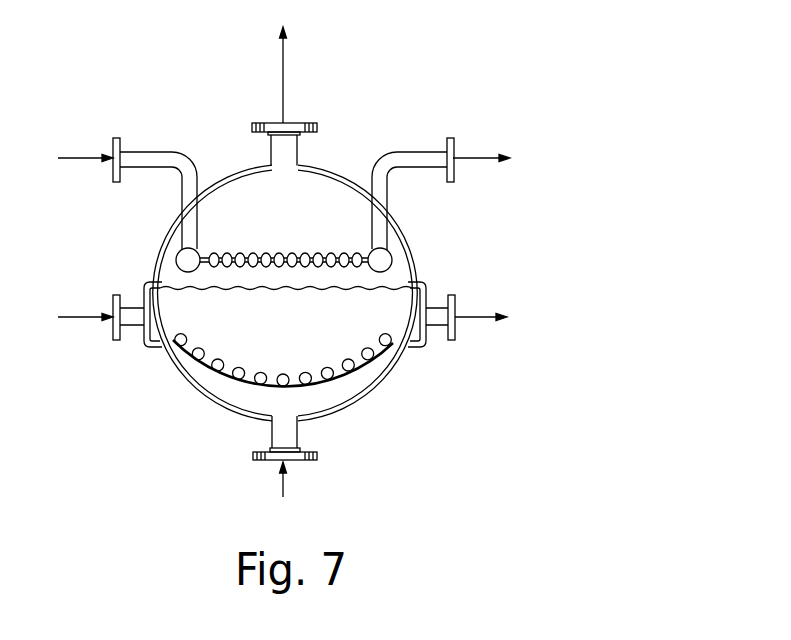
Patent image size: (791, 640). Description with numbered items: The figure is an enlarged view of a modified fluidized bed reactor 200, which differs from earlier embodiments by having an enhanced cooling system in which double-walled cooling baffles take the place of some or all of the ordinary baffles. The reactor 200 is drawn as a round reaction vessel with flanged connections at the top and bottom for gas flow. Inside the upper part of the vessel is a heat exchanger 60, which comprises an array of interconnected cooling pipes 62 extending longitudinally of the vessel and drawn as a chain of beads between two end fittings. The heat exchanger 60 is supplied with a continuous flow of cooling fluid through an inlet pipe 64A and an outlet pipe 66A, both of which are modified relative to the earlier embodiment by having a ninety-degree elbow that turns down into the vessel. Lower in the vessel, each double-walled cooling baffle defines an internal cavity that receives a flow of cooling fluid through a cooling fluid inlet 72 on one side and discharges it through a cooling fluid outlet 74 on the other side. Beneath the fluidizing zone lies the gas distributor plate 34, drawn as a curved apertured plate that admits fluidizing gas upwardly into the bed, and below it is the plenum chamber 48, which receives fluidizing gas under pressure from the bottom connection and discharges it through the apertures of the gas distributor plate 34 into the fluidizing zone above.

The fluidized bed reactor 200 is at (303, 262).
The inlet pipe 64A is at (138, 154).
The outlet pipe 66A is at (422, 157).
The heat exchanger 60 is at (165, 260).
The cooling pipes 62 is at (250, 256).
The cooling fluid inlet 72 is at (130, 322).
The cooling fluid outlet 74 is at (437, 312).
The gas distributor plate 34 is at (353, 352).
The plenum chamber 48 is at (320, 404).